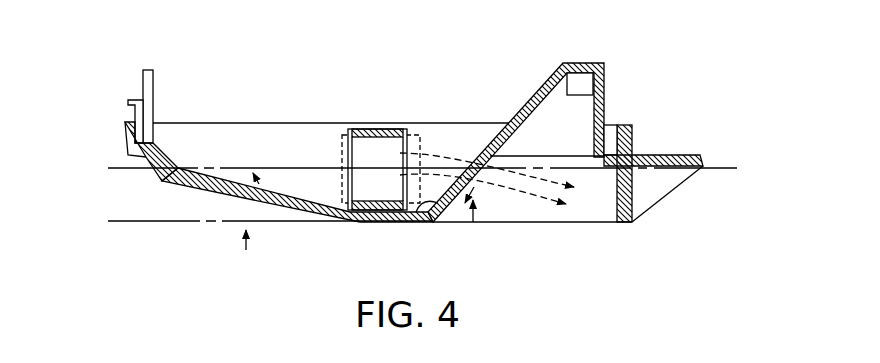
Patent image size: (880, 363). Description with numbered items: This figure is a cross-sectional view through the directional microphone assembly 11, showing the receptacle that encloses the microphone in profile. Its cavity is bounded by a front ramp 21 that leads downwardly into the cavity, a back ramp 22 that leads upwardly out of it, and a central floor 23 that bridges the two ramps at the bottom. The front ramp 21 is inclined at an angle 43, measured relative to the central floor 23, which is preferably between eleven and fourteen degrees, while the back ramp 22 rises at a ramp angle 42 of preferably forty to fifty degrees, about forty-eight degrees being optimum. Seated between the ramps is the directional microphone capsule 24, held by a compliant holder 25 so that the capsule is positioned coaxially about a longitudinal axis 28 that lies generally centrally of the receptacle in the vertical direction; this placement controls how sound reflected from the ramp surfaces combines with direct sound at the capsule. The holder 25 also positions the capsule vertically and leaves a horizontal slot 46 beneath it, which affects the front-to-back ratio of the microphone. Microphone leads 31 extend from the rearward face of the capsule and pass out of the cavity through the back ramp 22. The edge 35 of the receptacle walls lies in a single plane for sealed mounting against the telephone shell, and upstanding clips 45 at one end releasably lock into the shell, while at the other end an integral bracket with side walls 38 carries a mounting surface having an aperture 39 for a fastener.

The assembly 11 is at (657, 154).
The front ramp 21 is at (238, 184).
The back ramp 22 is at (498, 136).
The central floor 23 is at (447, 214).
The directional microphone capsule 24 is at (340, 150).
The compliant holder 25 is at (380, 128).
The longitudinal axis 28 is at (128, 169).
The microphone leads 31 is at (541, 196).
The edge 35 is at (126, 121).
The side walls 38 is at (652, 202).
The aperture 39 is at (667, 155).
The ramp angle 42 is at (476, 208).
The angle 43 is at (248, 211).
The upstanding clips 45 is at (137, 99).
The horizontal slot 46 is at (352, 213).